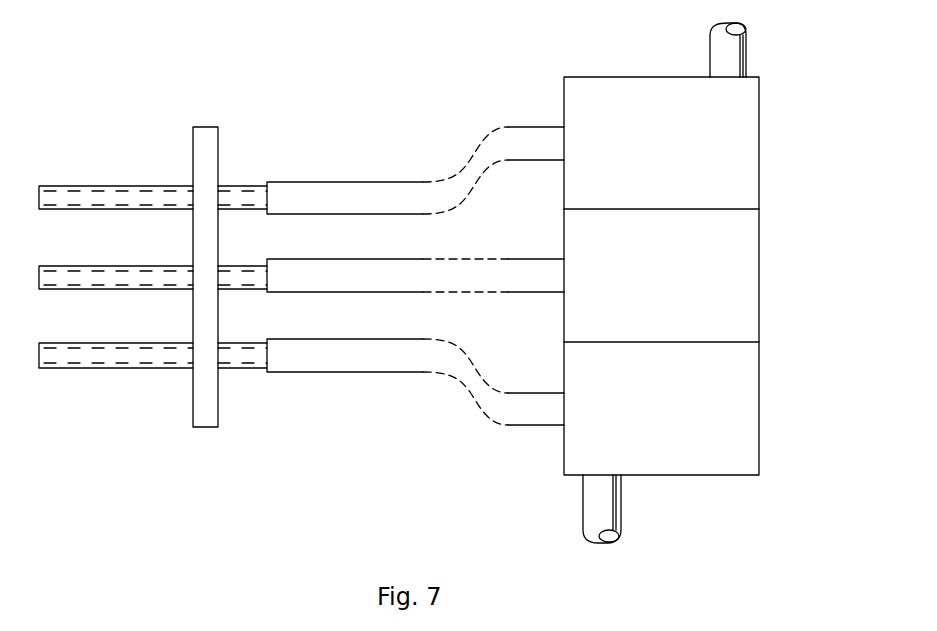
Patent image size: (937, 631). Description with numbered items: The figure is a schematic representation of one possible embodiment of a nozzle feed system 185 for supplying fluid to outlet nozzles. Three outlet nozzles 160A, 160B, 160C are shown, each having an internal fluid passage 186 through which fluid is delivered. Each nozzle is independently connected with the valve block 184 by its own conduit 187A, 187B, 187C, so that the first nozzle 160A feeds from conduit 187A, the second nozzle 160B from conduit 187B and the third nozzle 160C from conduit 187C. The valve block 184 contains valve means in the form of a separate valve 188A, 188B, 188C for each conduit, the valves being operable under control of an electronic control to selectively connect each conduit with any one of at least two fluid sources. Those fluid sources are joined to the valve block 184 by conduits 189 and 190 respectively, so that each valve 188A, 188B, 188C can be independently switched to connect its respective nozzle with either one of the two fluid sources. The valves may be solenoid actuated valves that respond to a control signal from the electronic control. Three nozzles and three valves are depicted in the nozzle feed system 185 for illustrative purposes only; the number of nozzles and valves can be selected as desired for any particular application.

The outlet nozzle 160A is at (62, 186).
The outlet nozzle 160B is at (75, 290).
The outlet nozzle 160C is at (82, 368).
The internal fluid passage 186 is at (60, 273).
The conduit 187A is at (355, 182).
The conduit 187B is at (318, 259).
The conduit 187C is at (353, 372).
The valve 188A is at (744, 152).
The valve 188B is at (748, 295).
The valve 188C is at (744, 412).
The conduit 189 is at (745, 50).
The conduit 190 is at (616, 515).
The valve block 184 is at (732, 476).
The nozzle feed system 185 is at (302, 478).